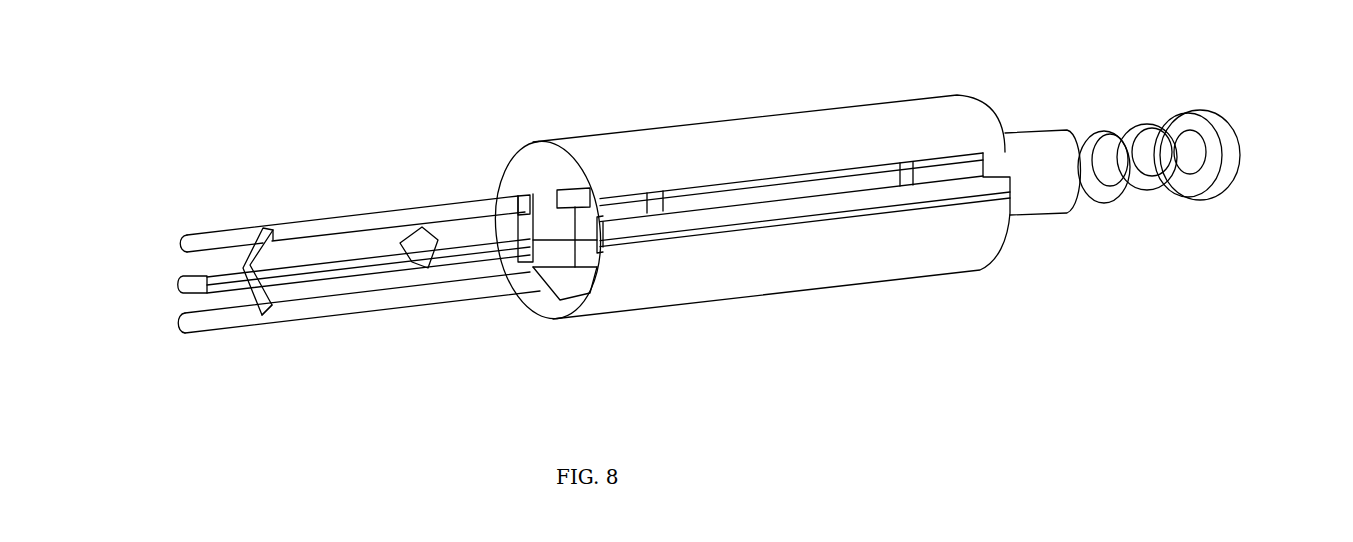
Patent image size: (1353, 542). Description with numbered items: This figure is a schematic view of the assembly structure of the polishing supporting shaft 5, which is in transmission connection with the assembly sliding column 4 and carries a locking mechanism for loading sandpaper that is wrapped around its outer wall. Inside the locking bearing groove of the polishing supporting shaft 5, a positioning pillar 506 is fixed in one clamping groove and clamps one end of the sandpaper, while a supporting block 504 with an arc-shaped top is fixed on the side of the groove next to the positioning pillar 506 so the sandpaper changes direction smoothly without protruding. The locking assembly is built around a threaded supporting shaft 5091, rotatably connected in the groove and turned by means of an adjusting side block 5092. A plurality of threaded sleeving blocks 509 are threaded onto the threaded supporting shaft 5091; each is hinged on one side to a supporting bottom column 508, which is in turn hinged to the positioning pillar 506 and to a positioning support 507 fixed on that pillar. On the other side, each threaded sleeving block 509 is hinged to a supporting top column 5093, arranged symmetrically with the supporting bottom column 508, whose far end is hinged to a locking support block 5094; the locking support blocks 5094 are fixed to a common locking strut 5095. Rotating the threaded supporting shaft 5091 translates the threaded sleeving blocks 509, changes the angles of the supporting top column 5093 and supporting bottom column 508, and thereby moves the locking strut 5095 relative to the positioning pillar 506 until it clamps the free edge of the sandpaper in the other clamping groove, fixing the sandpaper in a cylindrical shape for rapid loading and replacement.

The assembly sliding column 4 is at (1105, 160).
The polishing supporting shaft 5 is at (740, 260).
The supporting block 504 is at (773, 215).
The positioning pillar 506 is at (577, 279).
The positioning support 507 is at (255, 313).
The supporting bottom column 508 is at (528, 270).
The threaded sleeving blocks 509 is at (268, 292).
The threaded supporting shaft 5091 is at (392, 255).
The adjusting side block 5092 is at (175, 287).
The supporting top column 5093 is at (252, 270).
The locking support block 5094 is at (515, 210).
The locking strut 5095 is at (547, 190).